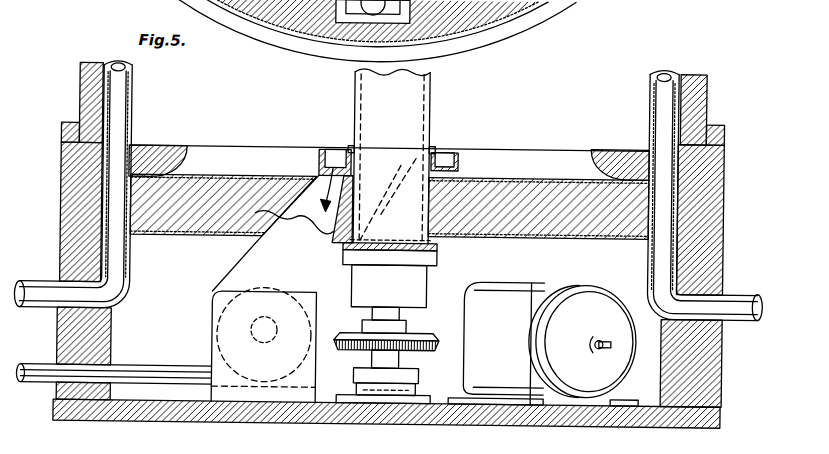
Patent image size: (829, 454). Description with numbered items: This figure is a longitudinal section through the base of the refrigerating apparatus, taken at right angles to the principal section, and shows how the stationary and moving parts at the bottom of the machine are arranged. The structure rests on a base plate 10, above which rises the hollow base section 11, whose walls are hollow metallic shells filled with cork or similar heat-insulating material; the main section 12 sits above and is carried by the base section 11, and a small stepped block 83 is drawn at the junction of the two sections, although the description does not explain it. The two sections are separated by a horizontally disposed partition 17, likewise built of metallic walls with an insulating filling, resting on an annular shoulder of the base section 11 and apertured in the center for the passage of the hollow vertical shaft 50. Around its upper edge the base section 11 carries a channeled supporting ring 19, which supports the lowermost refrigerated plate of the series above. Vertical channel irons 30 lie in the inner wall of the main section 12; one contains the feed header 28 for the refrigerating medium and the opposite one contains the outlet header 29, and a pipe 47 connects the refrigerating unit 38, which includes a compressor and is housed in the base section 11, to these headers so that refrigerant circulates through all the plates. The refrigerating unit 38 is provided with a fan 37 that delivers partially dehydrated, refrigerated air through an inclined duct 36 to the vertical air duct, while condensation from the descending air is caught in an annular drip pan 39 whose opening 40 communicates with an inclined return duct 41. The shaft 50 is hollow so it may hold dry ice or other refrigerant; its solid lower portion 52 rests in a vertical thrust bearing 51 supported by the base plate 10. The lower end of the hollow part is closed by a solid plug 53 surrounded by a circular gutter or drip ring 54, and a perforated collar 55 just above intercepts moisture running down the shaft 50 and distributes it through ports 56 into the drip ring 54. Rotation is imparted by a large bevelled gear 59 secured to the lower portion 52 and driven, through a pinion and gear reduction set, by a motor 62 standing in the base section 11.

The base plate 10 is at (147, 423).
The hollow base section 11 is at (72, 333).
The main section 12 is at (92, 90).
The partition 17 is at (170, 230).
The channeled supporting ring 19 is at (185, 150).
The feed header 28 is at (118, 106).
The outlet header 29 is at (660, 112).
The channel iron 30 is at (104, 68).
The inclined duct 36 is at (384, 214).
The fan 37 is at (220, 284).
The refrigerating unit 38 is at (212, 308).
The annular drip pan 39 is at (458, 155).
The opening 40 is at (318, 172).
The inclined return duct 41 is at (290, 240).
The pipe 47 is at (42, 378).
The hollow vertical shaft 50 is at (429, 96).
The vertical thrust bearing 51 is at (408, 372).
The lower portion of the shaft 52 is at (400, 312).
The solid plug 53 is at (428, 280).
The drip ring 54 is at (386, 258).
The perforated collar 55 is at (442, 243).
The ports 56 is at (412, 240).
The bevelled gear 59 is at (432, 336).
The motor 62 is at (548, 284).
The step block 83 is at (79, 130).